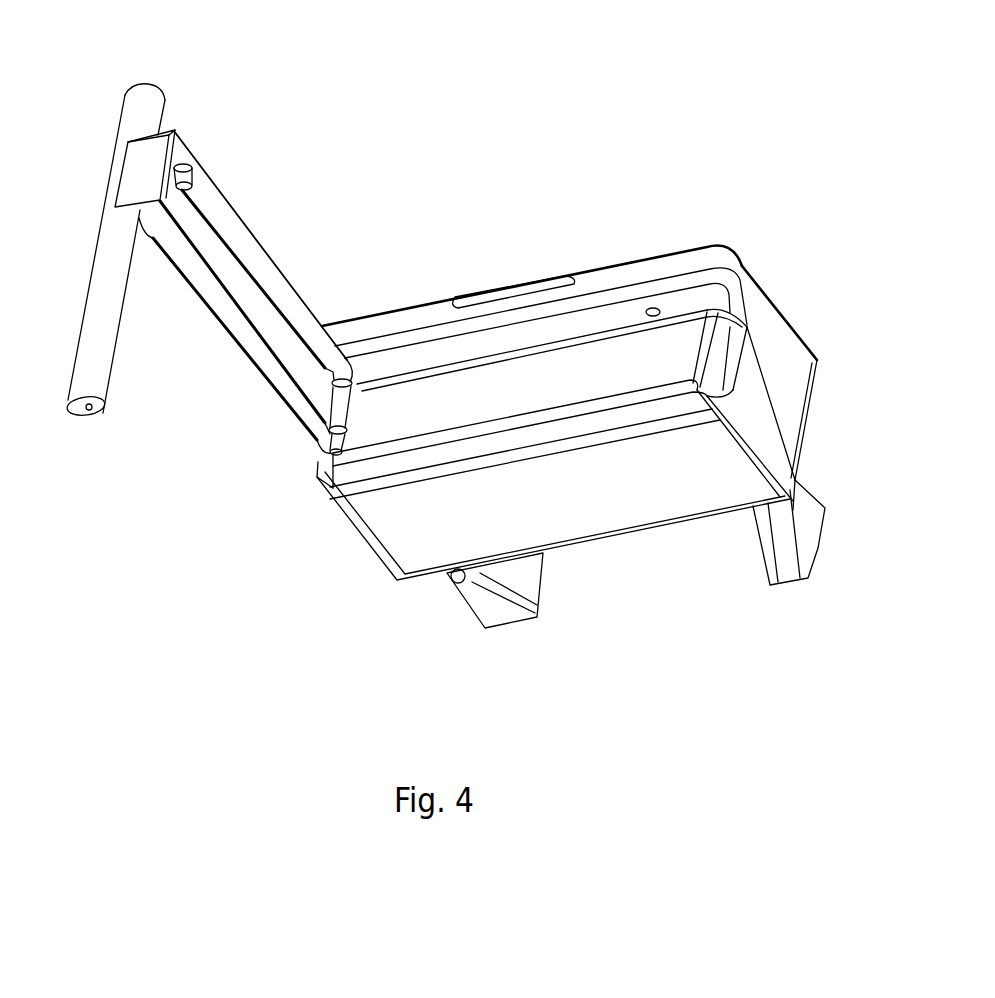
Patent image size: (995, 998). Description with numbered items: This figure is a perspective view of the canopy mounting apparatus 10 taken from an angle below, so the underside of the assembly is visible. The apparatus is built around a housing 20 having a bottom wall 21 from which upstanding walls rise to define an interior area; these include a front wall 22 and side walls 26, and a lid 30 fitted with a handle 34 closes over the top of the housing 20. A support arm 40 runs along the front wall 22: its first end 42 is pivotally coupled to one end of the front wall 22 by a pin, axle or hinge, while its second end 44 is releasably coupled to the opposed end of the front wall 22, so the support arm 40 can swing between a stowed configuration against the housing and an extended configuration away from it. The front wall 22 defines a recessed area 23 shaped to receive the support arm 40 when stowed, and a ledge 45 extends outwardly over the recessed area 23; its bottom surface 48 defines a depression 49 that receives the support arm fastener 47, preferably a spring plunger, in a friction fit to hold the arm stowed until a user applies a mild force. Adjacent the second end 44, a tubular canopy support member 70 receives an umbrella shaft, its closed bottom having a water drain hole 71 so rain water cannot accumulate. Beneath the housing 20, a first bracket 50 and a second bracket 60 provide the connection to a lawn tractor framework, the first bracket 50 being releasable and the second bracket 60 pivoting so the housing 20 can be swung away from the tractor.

The canopy mounting apparatus 10 is at (464, 104).
The housing 20 is at (575, 408).
The bottom wall 21 is at (395, 545).
The front wall 22 is at (543, 309).
The recessed area 23 is at (593, 384).
The side walls 26 is at (790, 402).
The lid 30 is at (540, 266).
The handle 34 is at (513, 289).
The support arm 40 is at (214, 279).
The first end 42 is at (292, 422).
The second end 44 is at (133, 167).
The ledge 45 is at (700, 291).
The support arm fastener 47 is at (187, 190).
The bottom surface 48 is at (430, 354).
The depression 49 is at (657, 309).
The first bracket 50 is at (738, 560).
The second bracket 60 is at (556, 606).
The canopy support member 70 is at (123, 283).
The water drain hole 71 is at (87, 414).